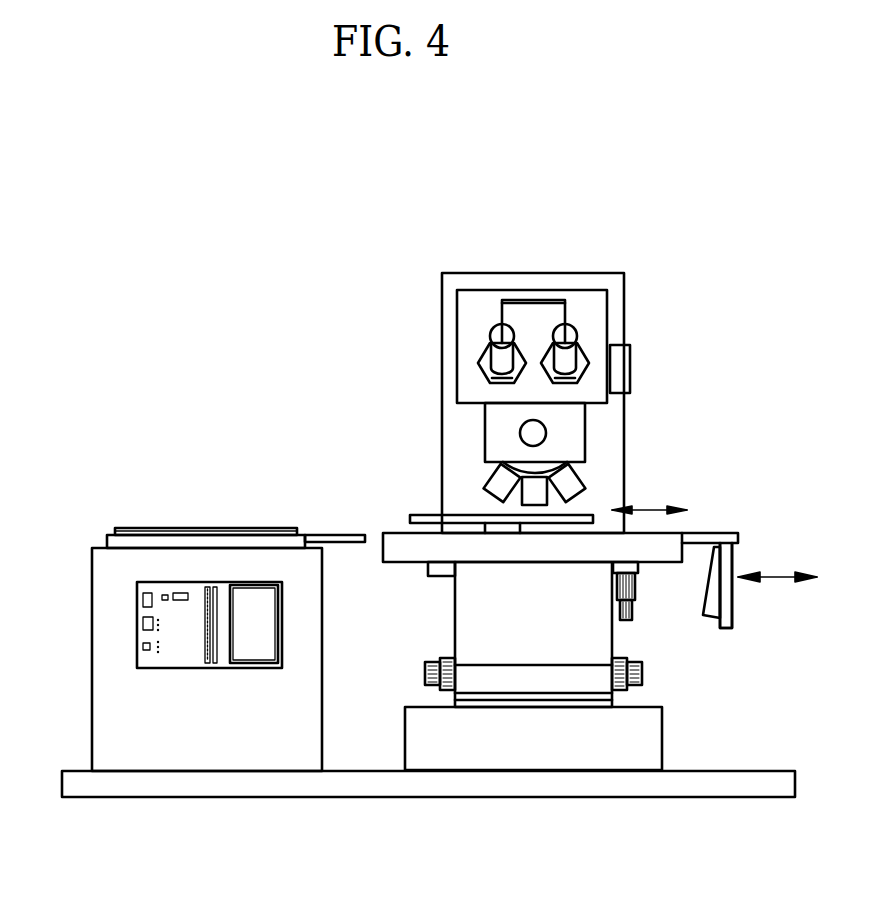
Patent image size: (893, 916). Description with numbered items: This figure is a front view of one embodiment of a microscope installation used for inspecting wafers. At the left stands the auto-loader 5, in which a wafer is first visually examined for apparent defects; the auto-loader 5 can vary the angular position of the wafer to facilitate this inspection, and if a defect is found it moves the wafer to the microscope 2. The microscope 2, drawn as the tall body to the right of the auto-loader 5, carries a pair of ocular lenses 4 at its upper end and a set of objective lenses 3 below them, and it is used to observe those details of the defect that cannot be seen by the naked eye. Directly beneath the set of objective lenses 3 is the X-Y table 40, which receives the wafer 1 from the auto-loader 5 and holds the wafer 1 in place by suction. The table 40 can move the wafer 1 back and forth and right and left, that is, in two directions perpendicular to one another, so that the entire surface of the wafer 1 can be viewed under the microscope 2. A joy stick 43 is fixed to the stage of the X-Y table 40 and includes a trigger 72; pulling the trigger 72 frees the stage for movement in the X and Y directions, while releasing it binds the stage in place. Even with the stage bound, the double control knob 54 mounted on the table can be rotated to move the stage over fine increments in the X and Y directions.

The wafer 1 is at (425, 515).
The microscope 2 is at (640, 342).
The set of objective lenses 3 is at (493, 485).
The pair of ocular lenses 4 is at (495, 332).
The auto-loader 5 is at (88, 608).
The X-Y table 40 is at (697, 528).
The joy stick 43 is at (728, 593).
The double control knob 54 is at (647, 612).
The trigger 72 is at (713, 607).